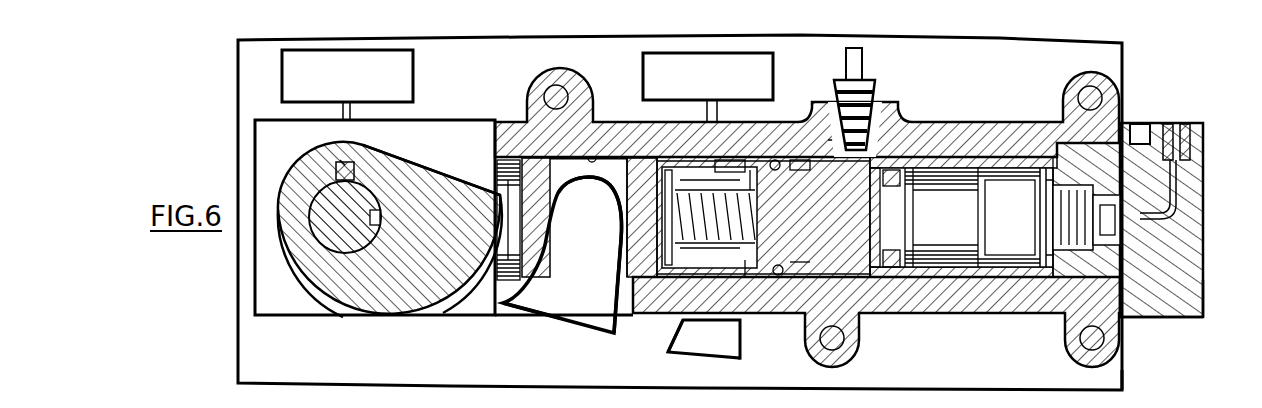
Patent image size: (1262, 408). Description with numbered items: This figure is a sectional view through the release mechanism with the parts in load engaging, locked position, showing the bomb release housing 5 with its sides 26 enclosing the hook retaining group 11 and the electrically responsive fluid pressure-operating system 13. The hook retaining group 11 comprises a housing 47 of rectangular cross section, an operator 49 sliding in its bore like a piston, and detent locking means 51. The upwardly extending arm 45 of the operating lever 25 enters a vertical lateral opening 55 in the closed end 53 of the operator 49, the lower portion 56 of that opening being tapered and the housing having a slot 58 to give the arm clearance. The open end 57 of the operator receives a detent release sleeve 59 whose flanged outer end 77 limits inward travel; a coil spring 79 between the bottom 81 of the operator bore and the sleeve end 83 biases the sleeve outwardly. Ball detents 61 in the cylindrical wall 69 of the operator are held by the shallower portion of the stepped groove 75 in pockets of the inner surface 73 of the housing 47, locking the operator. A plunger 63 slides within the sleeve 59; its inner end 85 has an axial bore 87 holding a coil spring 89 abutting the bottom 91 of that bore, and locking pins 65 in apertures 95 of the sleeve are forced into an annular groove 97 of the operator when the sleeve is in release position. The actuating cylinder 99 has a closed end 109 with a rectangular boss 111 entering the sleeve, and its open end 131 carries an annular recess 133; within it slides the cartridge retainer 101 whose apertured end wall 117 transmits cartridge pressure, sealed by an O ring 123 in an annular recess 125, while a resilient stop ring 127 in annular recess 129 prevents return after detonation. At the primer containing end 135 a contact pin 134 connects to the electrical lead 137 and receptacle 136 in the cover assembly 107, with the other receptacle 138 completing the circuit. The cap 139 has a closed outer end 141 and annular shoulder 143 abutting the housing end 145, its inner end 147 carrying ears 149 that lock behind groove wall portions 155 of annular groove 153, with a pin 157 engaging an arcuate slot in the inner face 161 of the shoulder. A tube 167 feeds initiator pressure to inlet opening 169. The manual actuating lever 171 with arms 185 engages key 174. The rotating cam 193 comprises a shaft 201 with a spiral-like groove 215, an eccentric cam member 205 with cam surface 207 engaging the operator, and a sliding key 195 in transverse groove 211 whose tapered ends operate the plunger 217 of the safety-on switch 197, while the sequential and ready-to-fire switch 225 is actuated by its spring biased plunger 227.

The bomb release housing 5 is at (237, 112).
The hook retaining group 11 is at (626, 176).
The electrically responsive fluid pressure-operating system 13 is at (958, 284).
The operating lever 25 is at (546, 317).
The bomb release housing sides 26 is at (238, 134).
The lever arm 45 is at (562, 322).
The hook retaining group housing 47 is at (431, 128).
The operator 49 is at (641, 171).
The detent locking means 51 is at (804, 120).
The closed end of operator 53 is at (518, 162).
The lateral opening 55 is at (622, 200).
The lower portion defining the opening 56 is at (625, 272).
The open end of operator 57 is at (792, 160).
The slot 58 is at (611, 318).
The detent release sleeve 59 is at (752, 168).
The ball detents 61 is at (770, 162).
The plunger 63 is at (807, 340).
The locking pins 65 is at (818, 210).
The cylindrical wall of operator 69 is at (642, 165).
The cylindrical inner surface of housing 73 is at (592, 157).
The stepped groove 75 is at (795, 295).
The outer end of detent release sleeve 77 is at (830, 135).
The coil spring 79 is at (672, 185).
The bottom of operator bore 81 is at (690, 208).
The end of sleeve 83 is at (683, 354).
The inner end of plunger 85 is at (700, 248).
The axial bore of plunger 87 is at (667, 295).
The coil spring 89 is at (703, 292).
The bottom of plunger bore 91 is at (738, 292).
The apertures 95 is at (750, 300).
The annular groove 97 is at (727, 160).
The actuating cylinder 99 is at (953, 156).
The cartridge retainer 101 is at (1003, 180).
The cover assembly 107 is at (1174, 321).
The closed end of actuating cylinder 109 is at (869, 273).
The rectangular boss 111 is at (871, 316).
The cartridge retainer end wall 117 is at (908, 219).
The O ring 123 is at (900, 168).
The annular recess 125 is at (935, 270).
The resilient stop ring 127 is at (928, 166).
The annular recess 129 is at (961, 170).
The open end of actuating cylinder 131 is at (990, 165).
The annular recess 133 is at (1033, 170).
The electrical contact pin 134 is at (1180, 258).
The primer containing end of retainer 135 is at (1041, 258).
The single contact receptacle 136 is at (1186, 122).
The electrical lead 137 is at (1204, 195).
The single contact receptacle 138 is at (1165, 123).
The cap 139 is at (1188, 299).
The outer end of cap 141 is at (1205, 297).
The annular shoulder portion 143 is at (1138, 123).
The end of hook retaining housing 145 is at (1125, 283).
The inner end of cap 147 is at (1016, 315).
The ears 149 is at (1070, 143).
The annular groove 153 is at (1068, 321).
The groove wall portions 155 is at (1080, 145).
The pin 157 is at (1105, 73).
The inner face of cover shoulder 161 is at (1122, 382).
The tube 167 is at (858, 70).
The inlet opening 169 is at (878, 126).
The actuating lever 171 is at (740, 358).
The key 174 is at (499, 186).
The arms 185 is at (695, 357).
The rotating cam 193 is at (303, 297).
The sliding key 195 is at (340, 160).
The safety-on switch 197 is at (282, 75).
The shaft 201 is at (346, 240).
The cam member 205 is at (397, 303).
The cam surface 207 is at (466, 300).
The transverse groove 211 is at (352, 164).
The spiral-like groove 215 is at (392, 215).
The plunger 217 is at (348, 102).
The sequential and ready-to-fire switch 225 is at (643, 70).
The spring biased plunger 227 is at (712, 120).